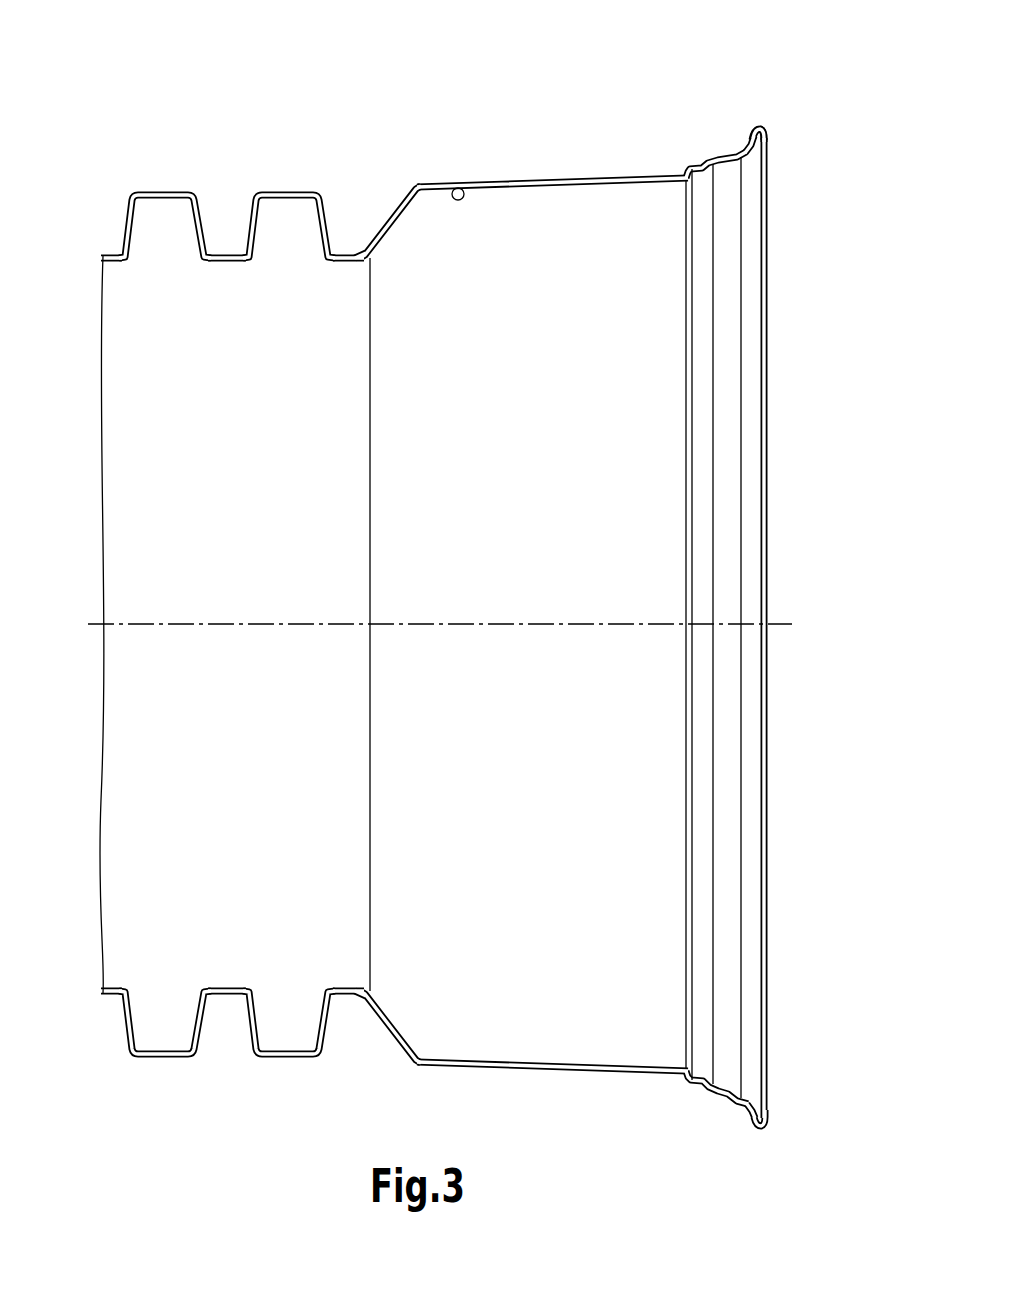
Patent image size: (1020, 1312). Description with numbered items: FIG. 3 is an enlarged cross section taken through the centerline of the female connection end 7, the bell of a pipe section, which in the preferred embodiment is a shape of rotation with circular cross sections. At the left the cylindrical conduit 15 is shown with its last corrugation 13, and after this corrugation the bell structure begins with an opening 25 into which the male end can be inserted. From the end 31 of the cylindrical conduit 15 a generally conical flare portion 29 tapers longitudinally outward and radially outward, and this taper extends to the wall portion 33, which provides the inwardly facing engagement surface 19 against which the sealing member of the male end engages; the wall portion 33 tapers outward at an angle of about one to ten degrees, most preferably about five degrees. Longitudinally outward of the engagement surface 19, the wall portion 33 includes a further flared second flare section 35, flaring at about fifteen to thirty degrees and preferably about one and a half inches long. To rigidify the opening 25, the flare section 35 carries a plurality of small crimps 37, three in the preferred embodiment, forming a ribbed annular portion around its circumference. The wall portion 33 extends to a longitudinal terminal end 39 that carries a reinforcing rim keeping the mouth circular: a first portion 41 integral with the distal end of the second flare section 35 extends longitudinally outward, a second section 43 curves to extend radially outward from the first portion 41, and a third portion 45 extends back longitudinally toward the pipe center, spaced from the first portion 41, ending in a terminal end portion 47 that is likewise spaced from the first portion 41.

The female connection end 7 is at (517, 165).
The corrugation 13 is at (290, 186).
The cylindrical conduit 15 is at (272, 262).
The engagement surface 19 is at (460, 187).
The opening 25 is at (784, 565).
The conical flare portion 29 is at (404, 219).
The end of the cylindrical conduit 31 is at (358, 264).
The wall portion 33 is at (533, 191).
The second flare section 35 is at (712, 160).
The crimps 37 is at (710, 162).
The longitudinal terminal end 39 is at (782, 104).
The first portion 41 is at (752, 150).
The second section 43 is at (762, 138).
The third portion 45 is at (754, 125).
The terminal end portion 47 is at (750, 122).